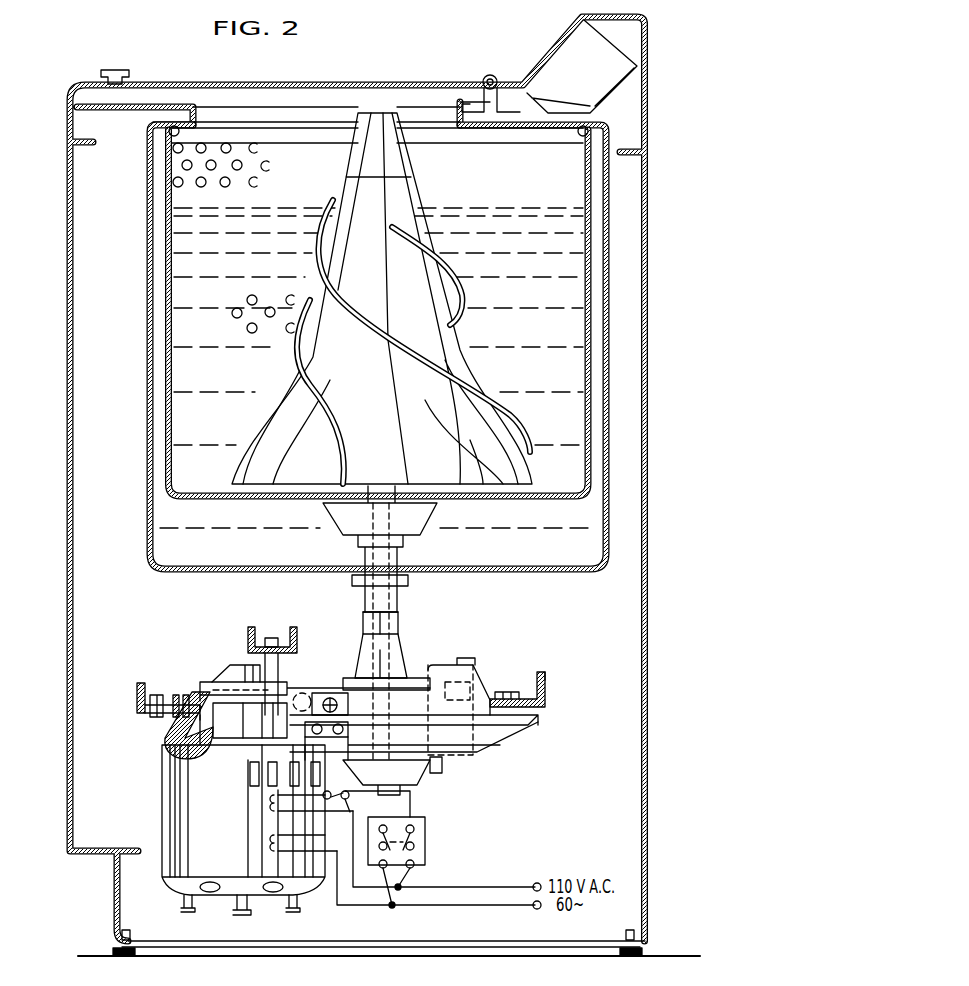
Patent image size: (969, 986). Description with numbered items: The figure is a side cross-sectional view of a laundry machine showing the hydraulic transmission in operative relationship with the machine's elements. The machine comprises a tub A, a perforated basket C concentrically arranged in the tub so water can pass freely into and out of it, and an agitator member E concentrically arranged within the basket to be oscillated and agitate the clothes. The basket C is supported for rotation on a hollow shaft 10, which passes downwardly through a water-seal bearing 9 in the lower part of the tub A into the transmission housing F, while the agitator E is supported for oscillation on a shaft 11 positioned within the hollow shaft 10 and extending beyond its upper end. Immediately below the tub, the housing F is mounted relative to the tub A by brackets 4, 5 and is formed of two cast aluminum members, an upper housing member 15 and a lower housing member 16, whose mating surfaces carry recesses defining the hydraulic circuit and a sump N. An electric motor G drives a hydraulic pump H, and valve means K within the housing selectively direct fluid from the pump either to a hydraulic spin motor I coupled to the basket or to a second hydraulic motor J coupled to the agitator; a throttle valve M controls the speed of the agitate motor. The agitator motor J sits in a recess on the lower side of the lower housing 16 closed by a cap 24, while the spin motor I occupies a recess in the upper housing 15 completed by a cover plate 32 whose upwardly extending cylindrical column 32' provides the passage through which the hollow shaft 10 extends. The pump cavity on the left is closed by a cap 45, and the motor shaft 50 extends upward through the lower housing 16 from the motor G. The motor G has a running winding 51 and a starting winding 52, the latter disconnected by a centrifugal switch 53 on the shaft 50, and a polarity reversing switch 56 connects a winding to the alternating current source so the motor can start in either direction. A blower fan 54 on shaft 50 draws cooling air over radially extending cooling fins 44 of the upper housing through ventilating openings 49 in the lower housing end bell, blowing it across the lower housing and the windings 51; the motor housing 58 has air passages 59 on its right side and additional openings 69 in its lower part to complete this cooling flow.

The tub A is at (147, 488).
The perforated basket C is at (165, 333).
The agitator member E is at (343, 188).
The housing F is at (510, 743).
The electric motor G is at (180, 795).
The hydraulic pump H is at (222, 690).
The hydraulic spin motor I is at (405, 700).
The second hydraulic motor J is at (432, 772).
The valve means K is at (303, 692).
The throttle valve M is at (330, 692).
The sump N is at (462, 682).
The bracket 4 is at (137, 700).
The bracket 5 is at (540, 678).
The water-seal bearing 9 is at (352, 580).
The hollow shaft 10 is at (400, 614).
The shaft 11 is at (372, 608).
The upper housing member 15 is at (488, 682).
The lower housing member 16 is at (478, 755).
The cap 24 is at (444, 767).
The cover plate 32 is at (390, 651).
The cylindrical column 32' is at (430, 615).
The cooling fins 44 is at (163, 693).
The cap 45 is at (230, 665).
The ventilating openings 49 is at (187, 700).
The shaft 50 is at (240, 735).
The running winding 51 is at (270, 843).
The starting winding 52 is at (270, 803).
The centrifugal switch 53 is at (333, 800).
The blower fan 54 is at (172, 742).
The polarity reversing switch 56 is at (416, 850).
The motor housing 58 is at (163, 815).
The air passages 59 is at (268, 775).
The openings 69 is at (270, 892).